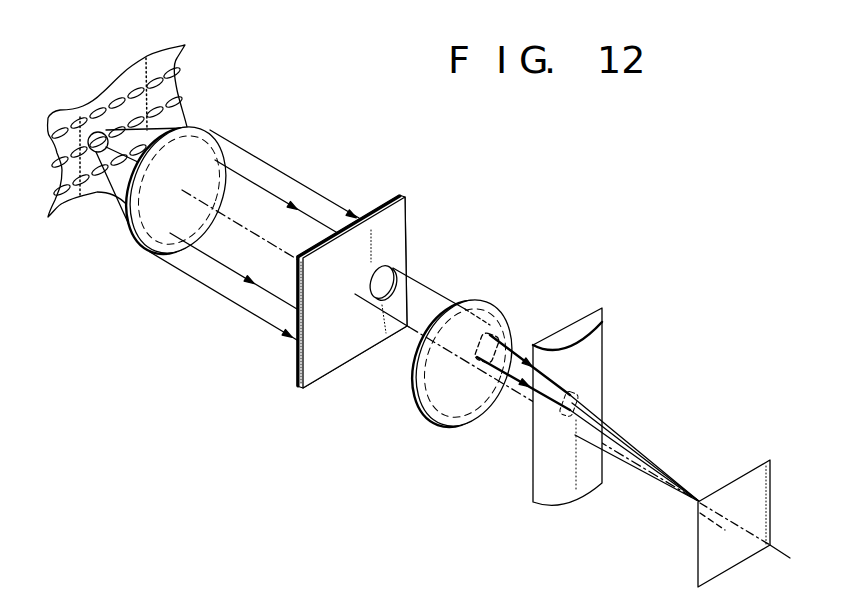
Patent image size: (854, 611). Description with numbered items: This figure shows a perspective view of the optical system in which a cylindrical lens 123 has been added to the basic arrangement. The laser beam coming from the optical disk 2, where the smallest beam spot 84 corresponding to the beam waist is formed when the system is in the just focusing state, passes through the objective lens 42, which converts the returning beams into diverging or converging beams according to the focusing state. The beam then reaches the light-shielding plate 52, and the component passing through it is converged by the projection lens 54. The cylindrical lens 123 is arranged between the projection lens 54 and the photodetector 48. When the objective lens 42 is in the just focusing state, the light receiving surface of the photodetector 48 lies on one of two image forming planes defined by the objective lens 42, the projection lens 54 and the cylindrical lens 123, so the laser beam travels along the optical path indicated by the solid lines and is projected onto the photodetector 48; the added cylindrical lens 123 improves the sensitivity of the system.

The optical disk 2 is at (176, 93).
The smallest beam spot 84 is at (93, 133).
The objective lens 42 is at (203, 144).
The light-shielding plate 52 is at (403, 238).
The projection lens 54 is at (492, 312).
The cylindrical lens 123 is at (592, 355).
The photodetector 48 is at (733, 493).